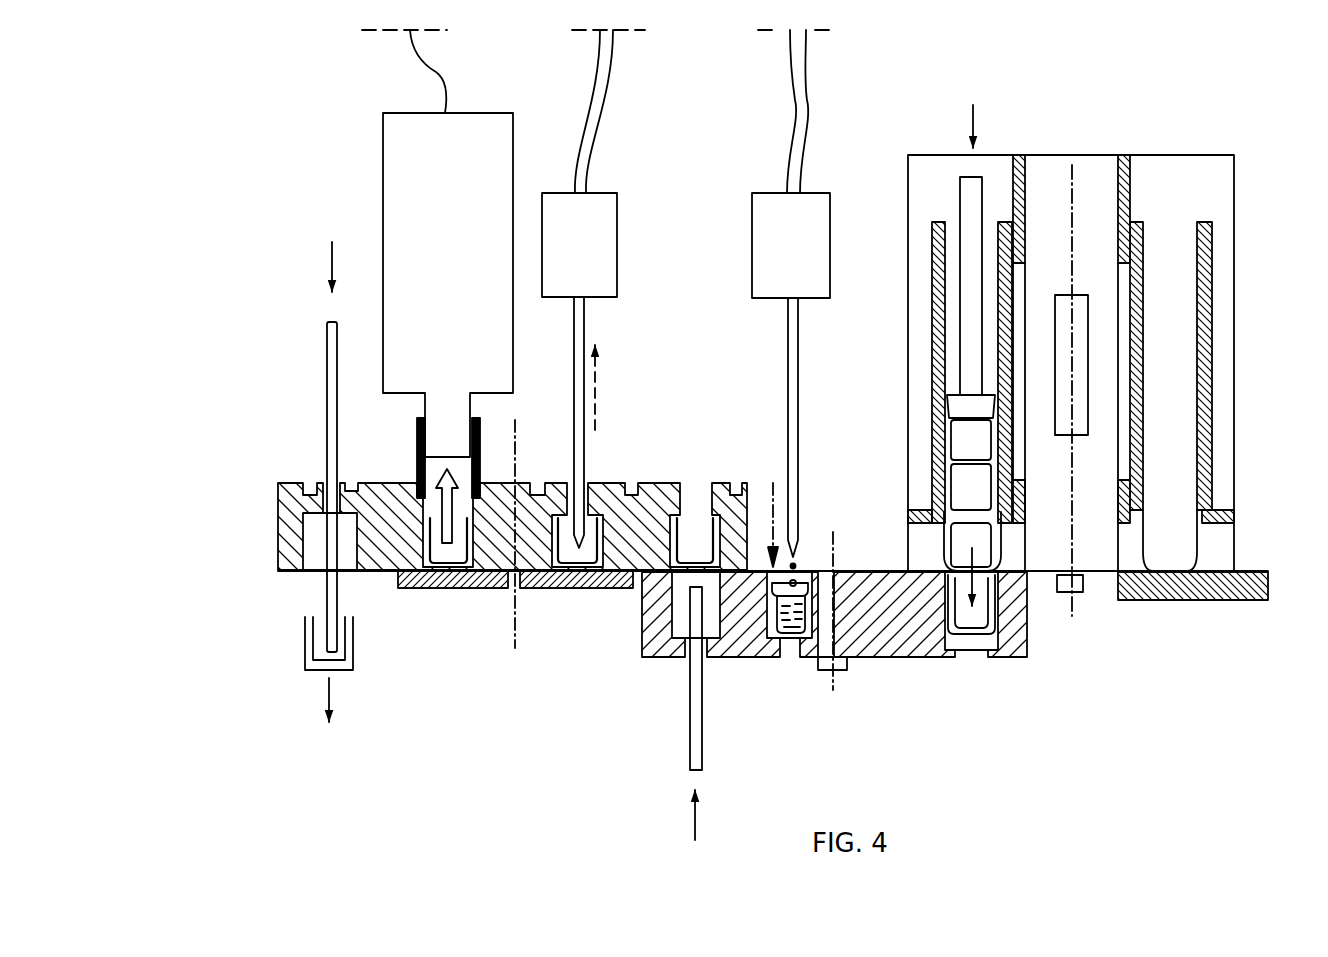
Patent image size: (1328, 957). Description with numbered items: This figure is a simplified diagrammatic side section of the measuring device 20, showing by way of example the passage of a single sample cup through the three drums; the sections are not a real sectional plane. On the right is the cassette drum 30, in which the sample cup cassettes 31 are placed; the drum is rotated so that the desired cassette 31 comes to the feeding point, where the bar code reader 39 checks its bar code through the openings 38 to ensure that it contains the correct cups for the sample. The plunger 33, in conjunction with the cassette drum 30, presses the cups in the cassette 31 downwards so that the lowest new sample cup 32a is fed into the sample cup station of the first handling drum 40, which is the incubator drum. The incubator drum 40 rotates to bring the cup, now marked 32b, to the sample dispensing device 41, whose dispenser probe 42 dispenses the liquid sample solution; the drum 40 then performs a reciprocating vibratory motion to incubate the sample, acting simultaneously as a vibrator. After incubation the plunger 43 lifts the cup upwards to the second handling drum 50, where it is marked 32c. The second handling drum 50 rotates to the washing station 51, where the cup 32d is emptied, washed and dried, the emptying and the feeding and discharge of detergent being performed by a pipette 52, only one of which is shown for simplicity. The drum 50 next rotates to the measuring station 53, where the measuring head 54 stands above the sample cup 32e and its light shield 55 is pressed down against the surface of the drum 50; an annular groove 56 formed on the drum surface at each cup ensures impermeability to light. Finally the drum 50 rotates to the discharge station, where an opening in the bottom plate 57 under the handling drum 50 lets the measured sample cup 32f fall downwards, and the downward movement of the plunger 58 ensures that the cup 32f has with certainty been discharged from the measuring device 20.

The measuring device 20 is at (292, 94).
The cassette drum 30 is at (1244, 195).
The sample cup cassette 31 is at (940, 312).
The new sample cup 32a is at (990, 633).
The sample cup at dispensing station 32b is at (783, 633).
The sample cup transferred to handling drum 32c is at (690, 513).
The sample cup at washing station 32d is at (565, 590).
The sample cup at measuring station 32e is at (431, 590).
The sample cup to be discharged 32f is at (306, 645).
The plunger 33 is at (960, 198).
The opening 38 is at (1121, 290).
The bar code reader 39 is at (1057, 295).
The first handling drum (incubator drum) 40 is at (924, 678).
The sample dispensing device 41 is at (748, 238).
The dispenser probe 42 is at (794, 508).
The plunger 43 is at (688, 713).
The second handling drum 50 is at (262, 530).
The washing station 51 is at (622, 238).
The pipette 52 is at (580, 408).
The measuring station 53 is at (366, 200).
The measuring head 54 is at (425, 404).
The light shield 55 is at (480, 432).
The annular groove 56 is at (604, 483).
The bottom plate 57 is at (400, 590).
The plunger 58 is at (325, 397).